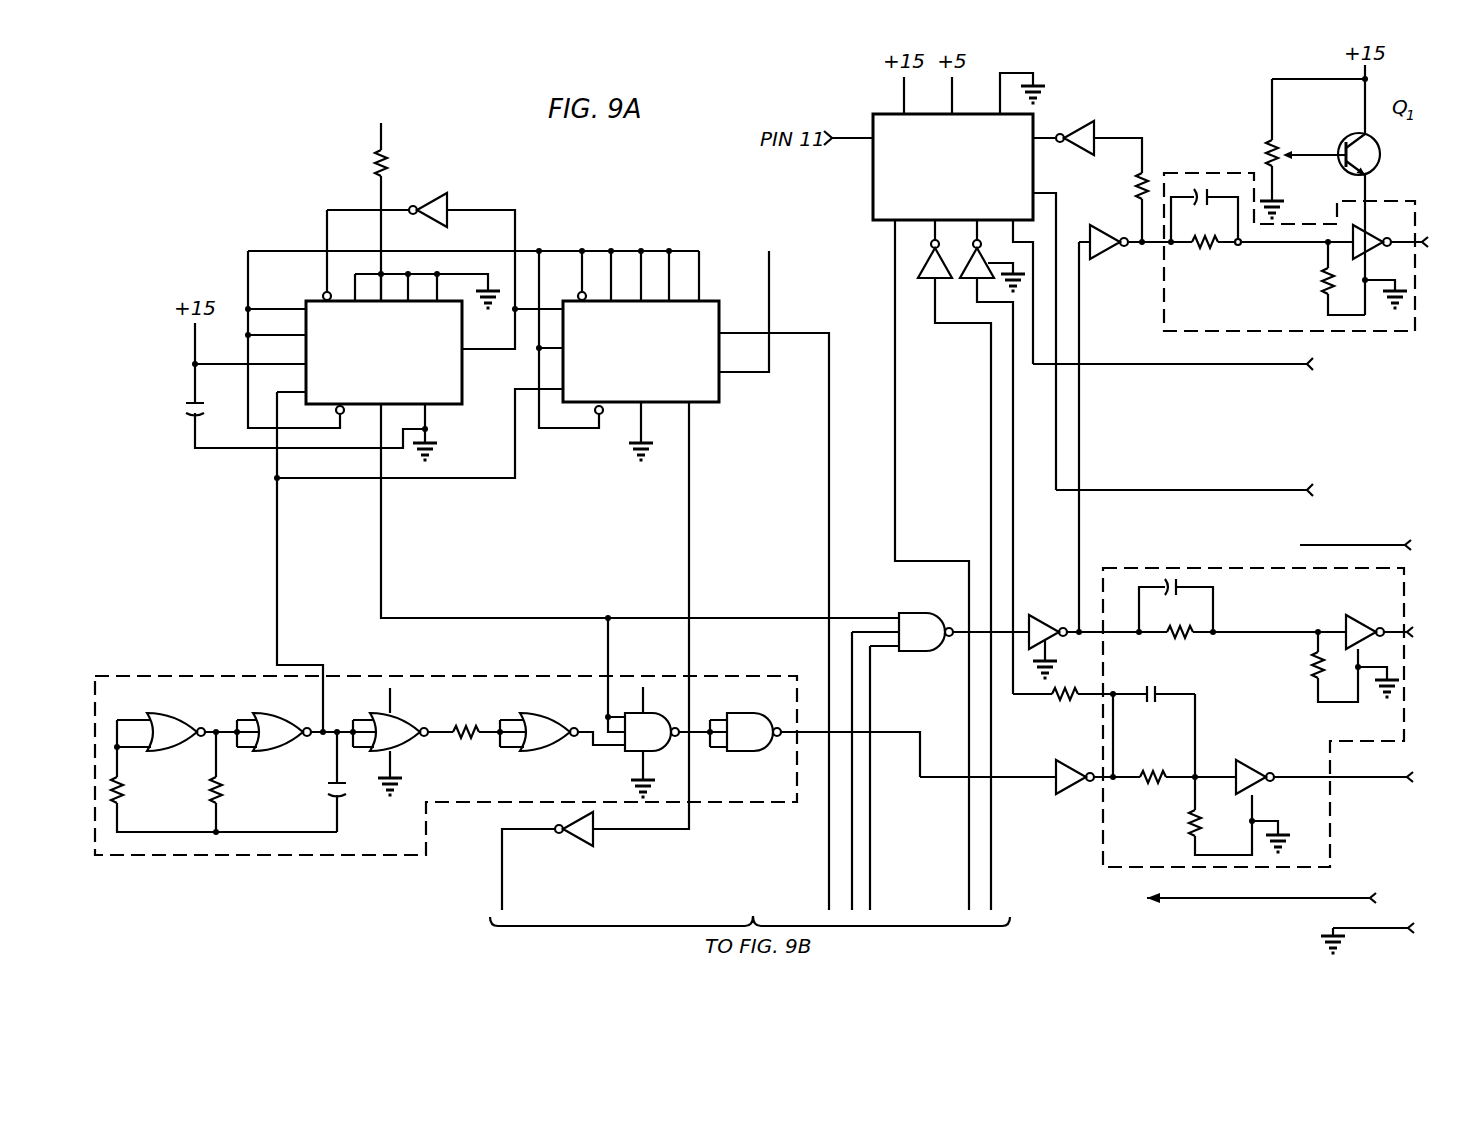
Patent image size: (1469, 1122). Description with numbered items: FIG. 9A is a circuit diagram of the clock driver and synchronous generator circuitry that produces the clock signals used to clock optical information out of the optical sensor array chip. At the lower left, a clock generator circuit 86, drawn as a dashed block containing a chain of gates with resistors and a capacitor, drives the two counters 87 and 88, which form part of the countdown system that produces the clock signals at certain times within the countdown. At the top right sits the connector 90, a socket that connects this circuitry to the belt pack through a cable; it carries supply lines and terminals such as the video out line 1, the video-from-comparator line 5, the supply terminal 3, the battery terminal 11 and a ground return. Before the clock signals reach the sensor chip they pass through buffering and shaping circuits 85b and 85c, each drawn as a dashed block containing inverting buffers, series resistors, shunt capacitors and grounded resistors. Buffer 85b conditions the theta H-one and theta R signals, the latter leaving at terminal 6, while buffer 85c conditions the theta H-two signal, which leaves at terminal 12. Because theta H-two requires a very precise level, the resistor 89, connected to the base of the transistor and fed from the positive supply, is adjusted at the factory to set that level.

The video out terminal 1 is at (1235, 357).
The +15V supply terminal 3 is at (1332, 539).
The video from comparator terminal 5 is at (1261, 488).
The phase R output terminal 6 is at (1420, 769).
The battery positive terminal 11 is at (1299, 913).
The phase H2 output terminal 12 is at (1429, 236).
The buffering and shaping circuit 85b is at (1098, 831).
The buffering and shaping circuit 85c is at (1160, 312).
The clock generator circuit 86 is at (368, 864).
The counter 87 is at (462, 393).
The counter 88 is at (719, 395).
The resistor 89 is at (1268, 152).
The connector 90 is at (876, 172).